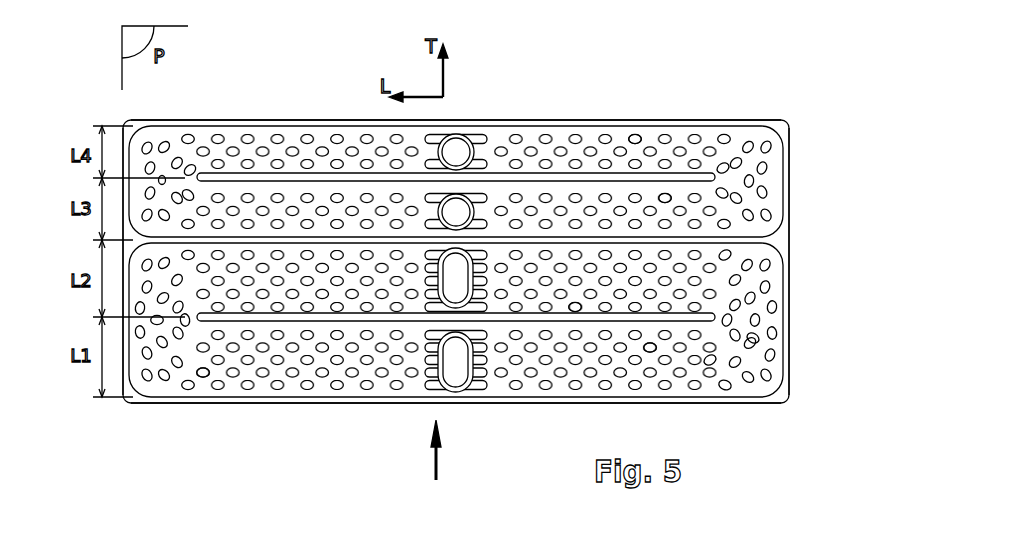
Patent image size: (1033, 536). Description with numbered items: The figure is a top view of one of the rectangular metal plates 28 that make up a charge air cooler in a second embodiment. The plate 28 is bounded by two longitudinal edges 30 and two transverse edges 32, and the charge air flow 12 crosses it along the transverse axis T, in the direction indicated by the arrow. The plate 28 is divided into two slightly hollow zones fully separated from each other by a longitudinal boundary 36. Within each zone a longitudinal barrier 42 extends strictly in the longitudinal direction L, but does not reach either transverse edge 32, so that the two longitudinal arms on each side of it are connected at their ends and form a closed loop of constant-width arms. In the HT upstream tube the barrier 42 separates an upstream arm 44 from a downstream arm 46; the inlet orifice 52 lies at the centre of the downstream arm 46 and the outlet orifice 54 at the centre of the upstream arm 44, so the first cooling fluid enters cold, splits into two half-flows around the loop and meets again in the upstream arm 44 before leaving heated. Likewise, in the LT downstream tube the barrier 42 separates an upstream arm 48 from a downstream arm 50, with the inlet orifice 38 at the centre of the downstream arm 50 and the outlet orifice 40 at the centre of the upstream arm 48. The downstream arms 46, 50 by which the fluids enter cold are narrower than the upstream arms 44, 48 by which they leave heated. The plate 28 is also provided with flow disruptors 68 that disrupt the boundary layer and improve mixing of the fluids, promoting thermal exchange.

The charge air flow 12 is at (436, 457).
The plate 28 is at (708, 102).
The longitudinal edge 30 is at (355, 120).
The transverse edge 32 is at (123, 367).
The longitudinal boundary 36 is at (327, 243).
The inlet orifice 38 is at (456, 150).
The outlet orifice 40 is at (460, 213).
The longitudinal barrier 42 is at (262, 177).
The upstream arm 44 is at (652, 355).
The downstream arm 46 is at (575, 300).
The upstream arm 48 is at (680, 200).
The downstream arm 50 is at (636, 150).
The inlet orifice 52 is at (450, 285).
The outlet orifice 54 is at (459, 357).
The flow disruptor 68 is at (202, 377).